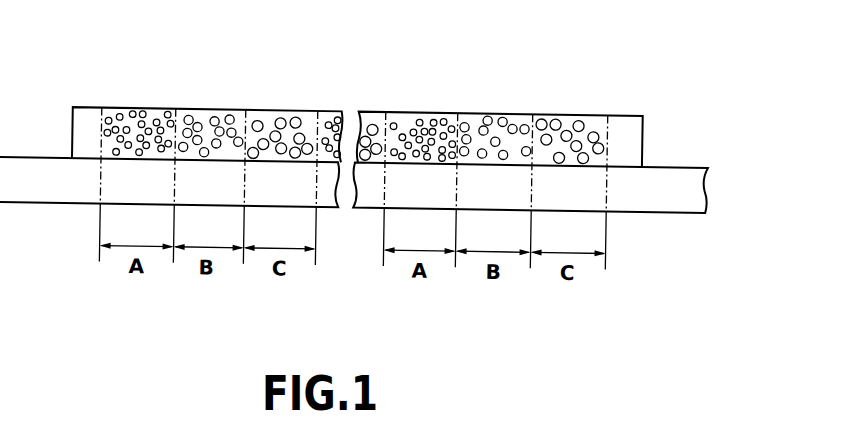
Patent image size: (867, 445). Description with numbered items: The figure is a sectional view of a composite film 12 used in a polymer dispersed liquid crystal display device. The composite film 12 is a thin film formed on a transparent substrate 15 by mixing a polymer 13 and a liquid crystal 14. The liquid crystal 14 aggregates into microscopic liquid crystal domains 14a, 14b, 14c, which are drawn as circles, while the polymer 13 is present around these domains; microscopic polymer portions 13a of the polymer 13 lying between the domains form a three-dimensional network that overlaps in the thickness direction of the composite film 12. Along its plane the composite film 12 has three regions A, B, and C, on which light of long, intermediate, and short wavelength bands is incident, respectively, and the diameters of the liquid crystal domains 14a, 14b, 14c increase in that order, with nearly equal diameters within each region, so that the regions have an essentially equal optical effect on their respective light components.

The composite film 12 is at (614, 118).
The polymer 13 is at (104, 128).
The microscopic polymer portions 13a is at (205, 142).
The liquid crystal 14 is at (355, 85).
The liquid crystal domain 14a is at (150, 107).
The liquid crystal domain 14b is at (201, 107).
The liquid crystal domain 14c is at (425, 112).
The transparent substrate 15 is at (704, 178).